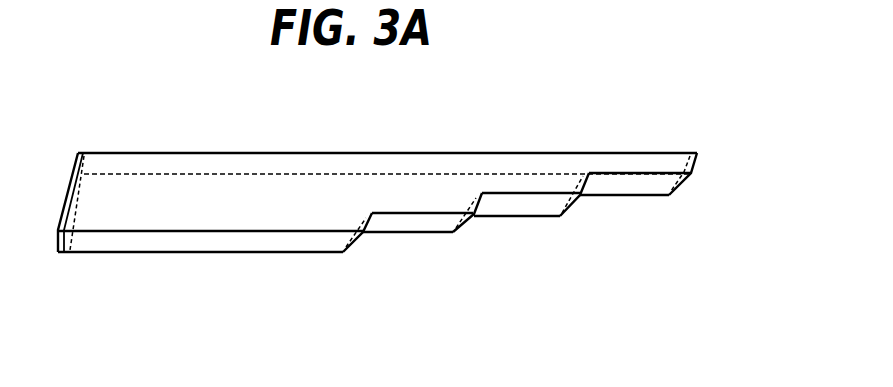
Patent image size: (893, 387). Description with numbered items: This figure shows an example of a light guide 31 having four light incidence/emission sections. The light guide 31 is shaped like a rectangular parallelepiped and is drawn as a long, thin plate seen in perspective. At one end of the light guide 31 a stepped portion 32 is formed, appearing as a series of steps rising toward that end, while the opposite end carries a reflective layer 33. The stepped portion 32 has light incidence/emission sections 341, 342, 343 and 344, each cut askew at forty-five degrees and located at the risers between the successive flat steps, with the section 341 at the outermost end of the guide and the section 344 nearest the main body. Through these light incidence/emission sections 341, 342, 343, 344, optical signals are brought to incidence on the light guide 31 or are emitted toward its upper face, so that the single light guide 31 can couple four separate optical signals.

The light guide 31 is at (313, 153).
The stepped portion 32 is at (427, 233).
The reflective layer 33 is at (80, 154).
The light incidence/emission section 341 is at (676, 190).
The light incidence/emission section 342 is at (570, 216).
The light incidence/emission section 343 is at (462, 228).
The light incidence/emission section 344 is at (354, 248).